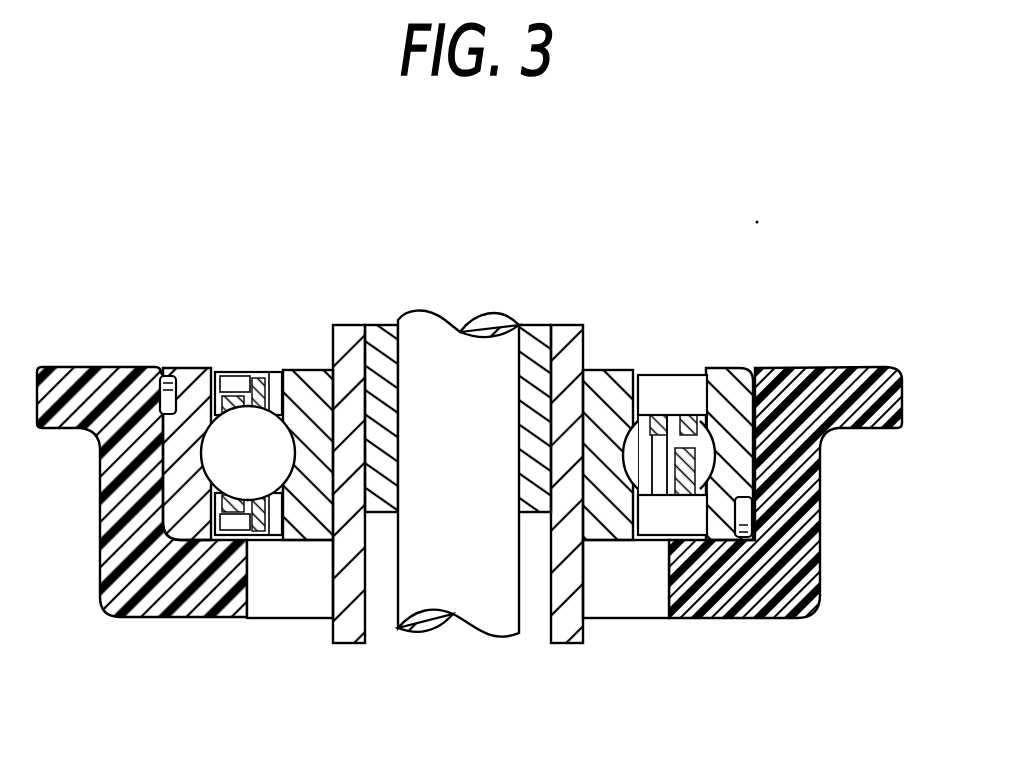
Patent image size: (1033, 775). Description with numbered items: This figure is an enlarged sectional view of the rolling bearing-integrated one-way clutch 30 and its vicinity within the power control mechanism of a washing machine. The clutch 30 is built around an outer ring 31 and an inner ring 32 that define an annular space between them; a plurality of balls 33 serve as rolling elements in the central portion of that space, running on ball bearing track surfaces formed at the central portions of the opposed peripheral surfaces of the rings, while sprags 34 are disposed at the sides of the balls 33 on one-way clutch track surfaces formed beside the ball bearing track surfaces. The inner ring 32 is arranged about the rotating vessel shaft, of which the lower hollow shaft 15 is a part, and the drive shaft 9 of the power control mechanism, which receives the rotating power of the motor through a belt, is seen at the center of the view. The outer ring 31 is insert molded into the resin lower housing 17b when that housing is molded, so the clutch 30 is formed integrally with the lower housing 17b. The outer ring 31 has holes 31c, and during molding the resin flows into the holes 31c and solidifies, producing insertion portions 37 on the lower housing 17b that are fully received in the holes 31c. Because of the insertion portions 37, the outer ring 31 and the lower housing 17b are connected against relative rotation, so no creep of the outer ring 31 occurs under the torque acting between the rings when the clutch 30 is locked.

The drive shaft 9 is at (460, 600).
The lower hollow shaft 15 is at (350, 643).
The lower housing 17b is at (130, 590).
The rolling bearing-integrated one-way clutch 30 is at (457, 469).
The outer ring 31 is at (197, 372).
The hole 31c is at (177, 372).
The inner ring 32 is at (302, 373).
The ball 33 is at (246, 428).
The sprag 34 is at (668, 385).
The insertion portion 37 is at (102, 475).